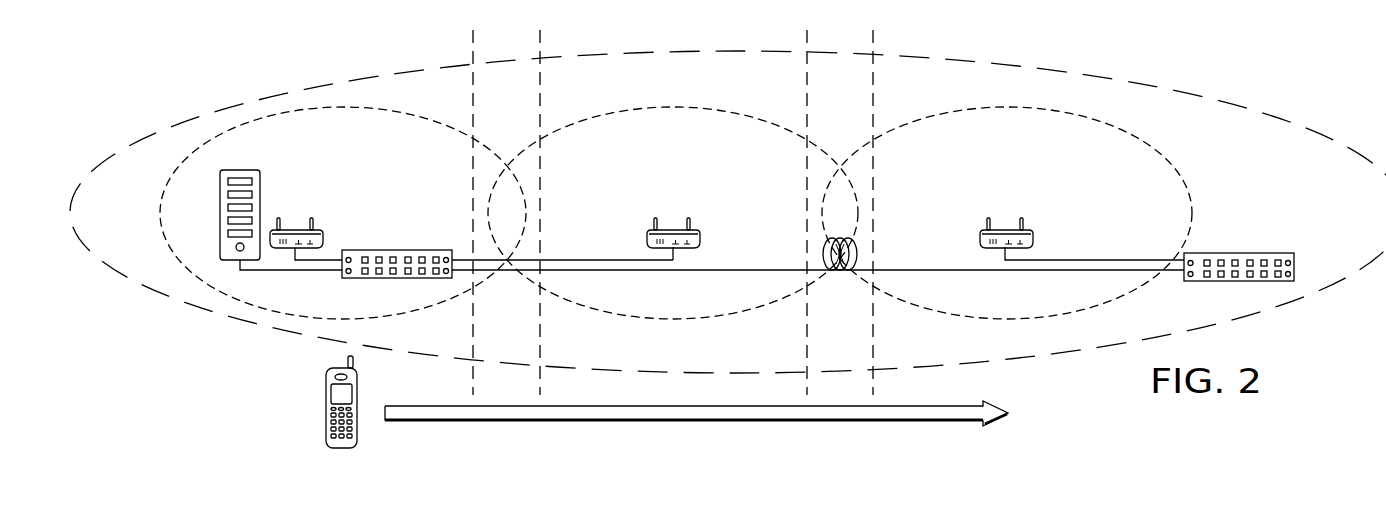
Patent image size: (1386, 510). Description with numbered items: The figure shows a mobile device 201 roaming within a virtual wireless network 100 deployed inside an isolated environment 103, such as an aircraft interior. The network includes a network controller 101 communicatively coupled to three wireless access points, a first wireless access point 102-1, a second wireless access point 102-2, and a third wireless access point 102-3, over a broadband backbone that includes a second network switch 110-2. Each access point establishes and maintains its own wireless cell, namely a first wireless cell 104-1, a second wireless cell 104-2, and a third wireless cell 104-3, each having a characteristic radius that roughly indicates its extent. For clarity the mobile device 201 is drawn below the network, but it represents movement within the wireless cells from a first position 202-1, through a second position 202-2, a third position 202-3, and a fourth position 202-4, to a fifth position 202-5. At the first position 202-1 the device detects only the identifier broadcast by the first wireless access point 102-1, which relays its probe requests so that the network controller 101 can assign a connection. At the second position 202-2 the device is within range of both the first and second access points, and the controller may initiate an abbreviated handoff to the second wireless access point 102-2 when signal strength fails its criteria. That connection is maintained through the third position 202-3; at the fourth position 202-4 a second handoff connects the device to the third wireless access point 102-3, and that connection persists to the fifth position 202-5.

The virtual wireless network 100 is at (224, 106).
The isolated environment 103 is at (693, 93).
The first wireless cell 104-1 is at (372, 157).
The second wireless cell 104-2 is at (707, 158).
The third wireless cell 104-3 is at (1038, 158).
The network controller 101 is at (262, 207).
The first wireless access point 102-1 is at (323, 239).
The second wireless access point 102-2 is at (701, 239).
The third wireless access point 102-3 is at (979, 239).
The second network switch 110-2 is at (1240, 253).
The mobile device 201 is at (325, 409).
The first position 202-1 is at (397, 421).
The second position 202-2 is at (505, 421).
The third position 202-3 is at (672, 421).
The fourth position 202-4 is at (840, 421).
The fifth position 202-5 is at (998, 419).